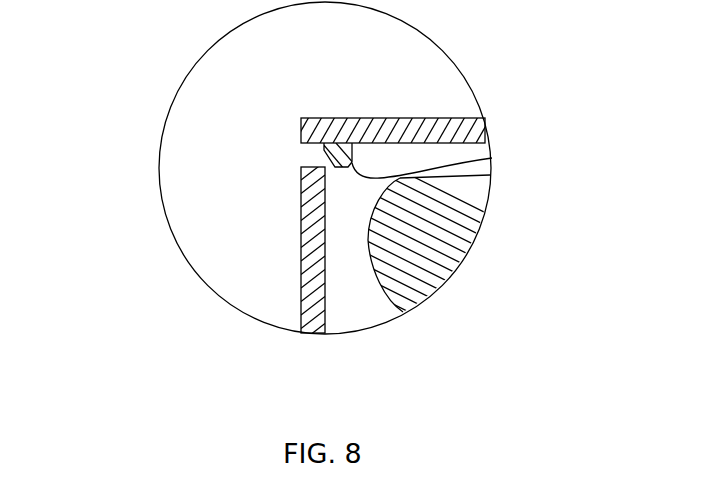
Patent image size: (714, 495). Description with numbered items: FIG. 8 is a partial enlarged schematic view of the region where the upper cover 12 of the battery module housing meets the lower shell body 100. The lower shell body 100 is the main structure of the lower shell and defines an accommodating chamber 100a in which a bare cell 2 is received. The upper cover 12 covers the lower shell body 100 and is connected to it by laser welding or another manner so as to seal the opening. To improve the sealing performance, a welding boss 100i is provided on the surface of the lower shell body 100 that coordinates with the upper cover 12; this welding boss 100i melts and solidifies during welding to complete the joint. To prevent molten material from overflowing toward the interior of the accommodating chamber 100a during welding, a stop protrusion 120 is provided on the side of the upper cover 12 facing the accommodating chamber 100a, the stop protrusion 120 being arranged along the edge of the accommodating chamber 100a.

The upper cover 12 is at (414, 138).
The stop protrusion 120 is at (492, 158).
The bare cell 2 is at (450, 255).
The lower shell body 100 is at (312, 270).
The accommodating chamber 100a is at (343, 232).
The welding boss 100i is at (322, 166).